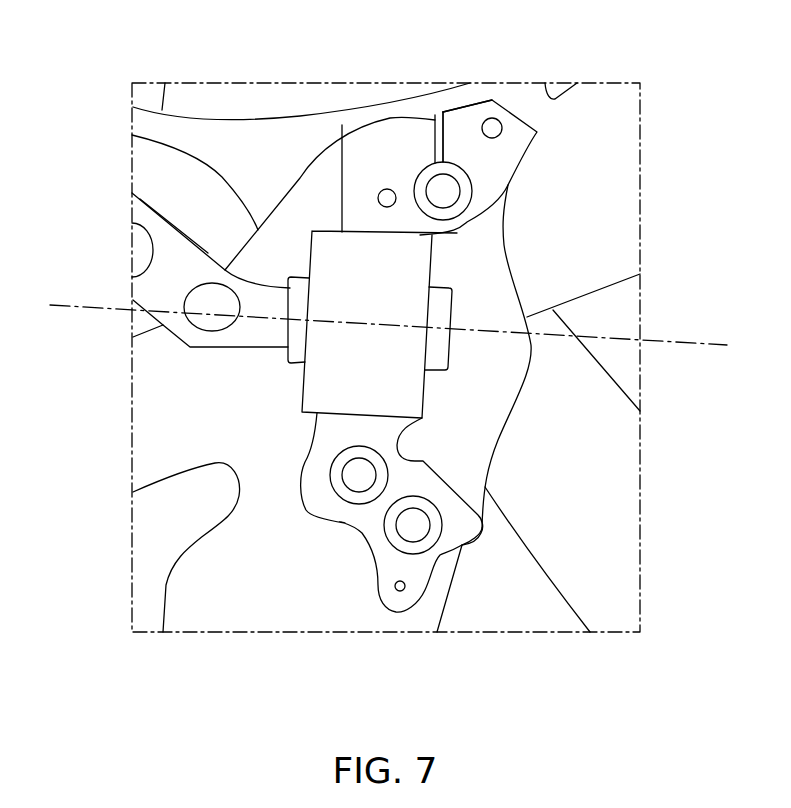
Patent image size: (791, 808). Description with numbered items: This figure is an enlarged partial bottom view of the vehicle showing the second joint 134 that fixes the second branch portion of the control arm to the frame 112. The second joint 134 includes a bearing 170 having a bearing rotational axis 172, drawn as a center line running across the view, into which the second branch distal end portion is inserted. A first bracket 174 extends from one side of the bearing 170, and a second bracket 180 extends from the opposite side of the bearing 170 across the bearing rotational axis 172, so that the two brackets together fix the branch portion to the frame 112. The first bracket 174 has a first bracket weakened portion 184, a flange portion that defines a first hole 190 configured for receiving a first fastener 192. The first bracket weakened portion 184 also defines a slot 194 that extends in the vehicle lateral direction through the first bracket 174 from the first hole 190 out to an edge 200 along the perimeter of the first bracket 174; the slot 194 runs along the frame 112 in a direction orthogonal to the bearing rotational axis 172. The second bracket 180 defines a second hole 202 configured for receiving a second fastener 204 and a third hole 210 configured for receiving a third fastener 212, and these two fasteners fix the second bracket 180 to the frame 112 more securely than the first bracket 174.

The frame 112 is at (307, 213).
The second joint 134 is at (310, 276).
The bearing 170 is at (387, 387).
The bearing rotational axis 172 is at (683, 343).
The first bracket 174 is at (505, 150).
The second bracket 180 is at (418, 482).
The first bracket weakened portion 184 is at (393, 156).
The first hole 190 is at (472, 201).
The first fastener 192 is at (445, 197).
The slot 194 is at (435, 115).
The edge 200 is at (470, 105).
The second hole 202 is at (333, 480).
The second fastener 204 is at (358, 476).
The third hole 210 is at (433, 548).
The third fastener 212 is at (418, 525).